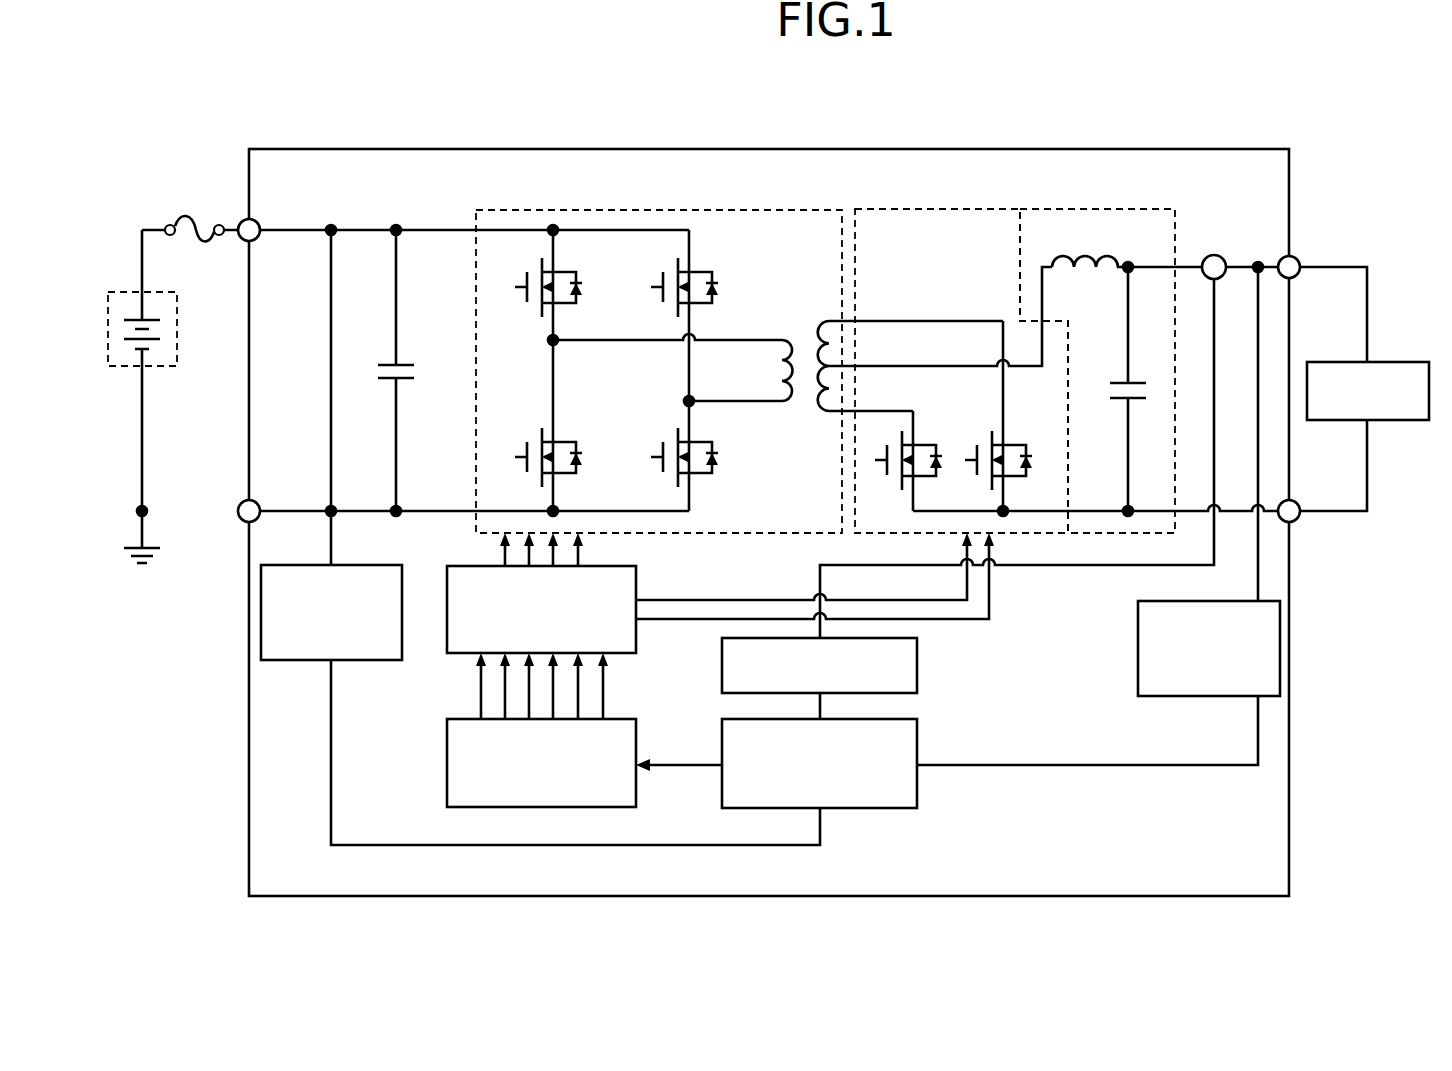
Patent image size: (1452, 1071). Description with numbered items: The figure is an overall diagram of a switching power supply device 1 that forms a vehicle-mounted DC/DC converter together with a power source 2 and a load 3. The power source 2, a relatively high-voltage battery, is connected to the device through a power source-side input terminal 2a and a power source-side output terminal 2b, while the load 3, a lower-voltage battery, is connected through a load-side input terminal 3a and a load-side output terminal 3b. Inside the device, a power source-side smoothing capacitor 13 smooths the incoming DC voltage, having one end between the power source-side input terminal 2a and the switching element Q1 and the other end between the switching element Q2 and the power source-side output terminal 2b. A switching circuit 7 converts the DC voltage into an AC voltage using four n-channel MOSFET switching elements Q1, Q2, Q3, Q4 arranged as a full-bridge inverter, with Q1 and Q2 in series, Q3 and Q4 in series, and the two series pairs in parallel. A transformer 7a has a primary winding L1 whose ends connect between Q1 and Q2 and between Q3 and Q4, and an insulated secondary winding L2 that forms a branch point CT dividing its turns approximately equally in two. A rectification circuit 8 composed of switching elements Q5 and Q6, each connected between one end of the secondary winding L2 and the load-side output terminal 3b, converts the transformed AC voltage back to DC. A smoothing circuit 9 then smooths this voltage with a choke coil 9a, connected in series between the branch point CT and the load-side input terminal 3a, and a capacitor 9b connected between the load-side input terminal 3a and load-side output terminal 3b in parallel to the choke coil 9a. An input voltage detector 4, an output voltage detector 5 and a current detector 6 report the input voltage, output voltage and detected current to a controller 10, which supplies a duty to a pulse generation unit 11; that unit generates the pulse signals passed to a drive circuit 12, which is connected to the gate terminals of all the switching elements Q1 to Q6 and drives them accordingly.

The switching power supply device 1 is at (845, 149).
The power source 2 is at (124, 292).
The power source-side input terminal 2a is at (240, 222).
The power source-side output terminal 2b is at (241, 520).
The load 3 is at (1391, 362).
The load-side input terminal 3a is at (1297, 258).
The load-side output terminal 3b is at (1297, 521).
The input voltage detector 4 is at (373, 565).
The output voltage detector 5 is at (1137, 640).
The current detector 6 is at (918, 682).
The switching circuit 7 is at (659, 354).
The transformer 7a is at (802, 345).
The rectification circuit 8 is at (961, 354).
The smoothing circuit 9 is at (1097, 354).
The choke coil 9a is at (1075, 258).
The capacitor 9b is at (1137, 381).
The controller 10 is at (918, 740).
The pulse generation unit 11 is at (446, 765).
The drive circuit 12 is at (446, 650).
The power source-side smoothing capacitor 13 is at (400, 362).
The switching element Q1 is at (537, 284).
The switching element Q2 is at (537, 454).
The switching element Q3 is at (673, 284).
The switching element Q4 is at (673, 454).
The switching element Q5 is at (916, 455).
The switching element Q6 is at (1007, 455).
The primary winding L1 is at (766, 326).
The secondary winding L2 is at (807, 323).
The branch point CT is at (824, 374).